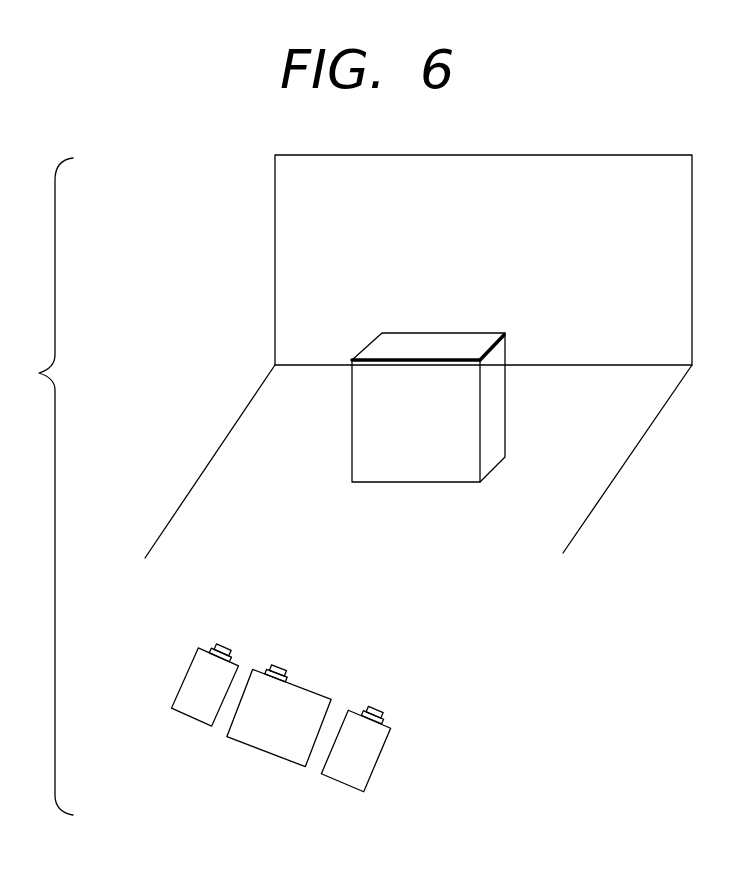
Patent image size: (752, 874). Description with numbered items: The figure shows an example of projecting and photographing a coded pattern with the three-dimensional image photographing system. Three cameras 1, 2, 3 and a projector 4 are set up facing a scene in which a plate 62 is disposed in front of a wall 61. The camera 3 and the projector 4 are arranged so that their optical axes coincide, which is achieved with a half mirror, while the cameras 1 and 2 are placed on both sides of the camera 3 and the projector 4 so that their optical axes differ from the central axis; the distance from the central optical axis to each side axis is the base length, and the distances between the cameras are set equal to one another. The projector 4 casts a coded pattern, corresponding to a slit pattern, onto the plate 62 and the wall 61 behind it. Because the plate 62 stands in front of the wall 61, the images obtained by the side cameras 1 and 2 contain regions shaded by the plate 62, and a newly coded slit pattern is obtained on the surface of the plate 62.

The camera 1 is at (200, 644).
The camera 2 is at (386, 718).
The camera 3 is at (299, 700).
The projector 4 is at (305, 697).
The wall 61 is at (310, 277).
The plate 62 is at (372, 411).